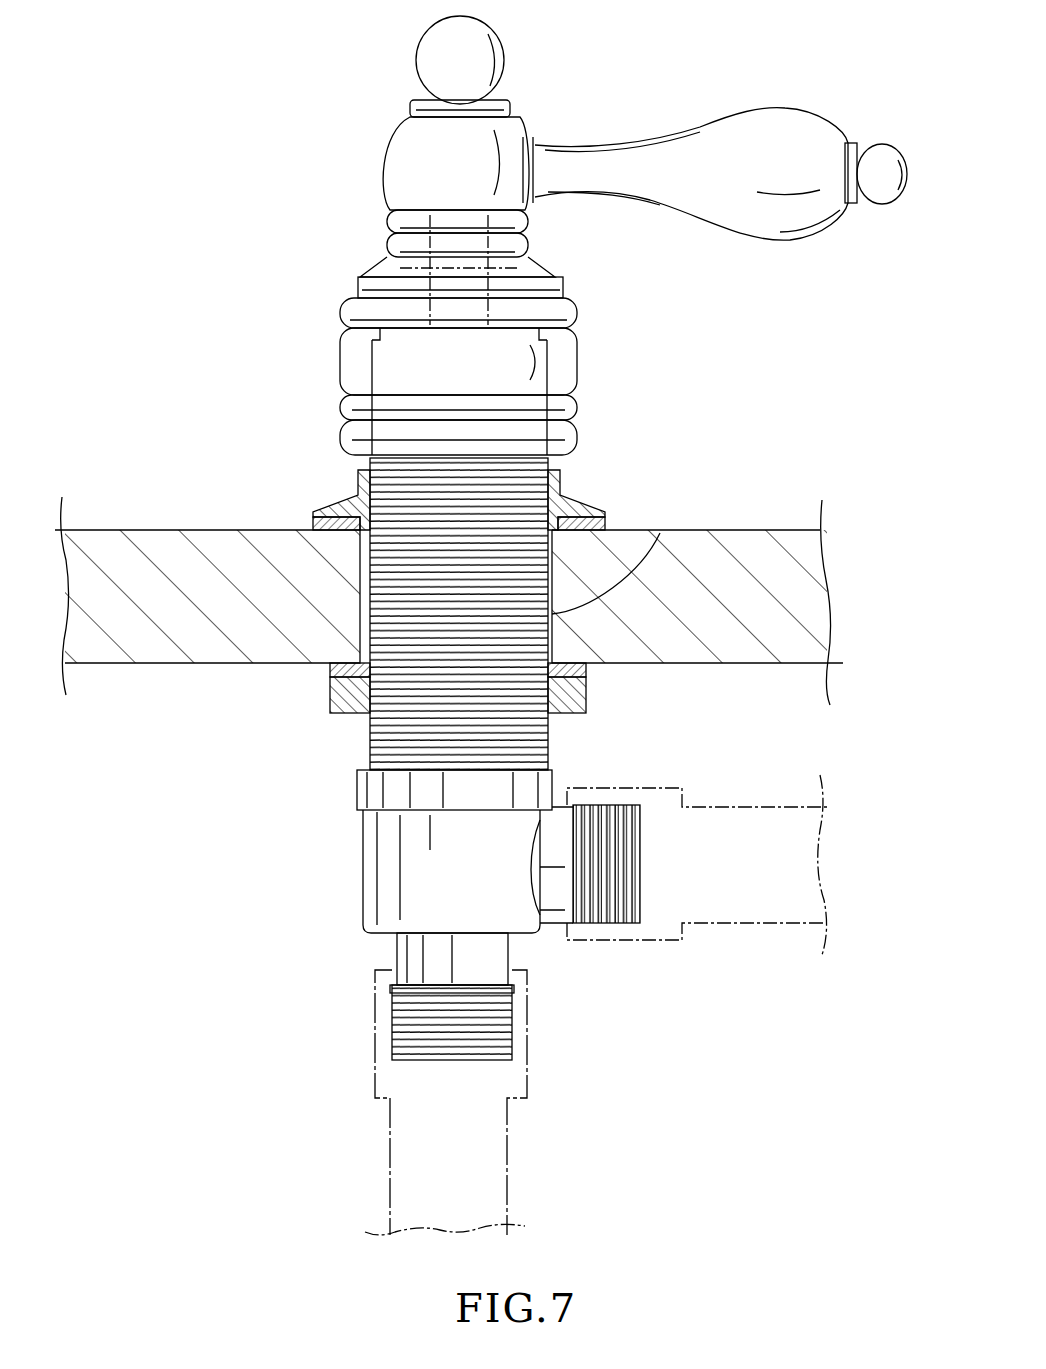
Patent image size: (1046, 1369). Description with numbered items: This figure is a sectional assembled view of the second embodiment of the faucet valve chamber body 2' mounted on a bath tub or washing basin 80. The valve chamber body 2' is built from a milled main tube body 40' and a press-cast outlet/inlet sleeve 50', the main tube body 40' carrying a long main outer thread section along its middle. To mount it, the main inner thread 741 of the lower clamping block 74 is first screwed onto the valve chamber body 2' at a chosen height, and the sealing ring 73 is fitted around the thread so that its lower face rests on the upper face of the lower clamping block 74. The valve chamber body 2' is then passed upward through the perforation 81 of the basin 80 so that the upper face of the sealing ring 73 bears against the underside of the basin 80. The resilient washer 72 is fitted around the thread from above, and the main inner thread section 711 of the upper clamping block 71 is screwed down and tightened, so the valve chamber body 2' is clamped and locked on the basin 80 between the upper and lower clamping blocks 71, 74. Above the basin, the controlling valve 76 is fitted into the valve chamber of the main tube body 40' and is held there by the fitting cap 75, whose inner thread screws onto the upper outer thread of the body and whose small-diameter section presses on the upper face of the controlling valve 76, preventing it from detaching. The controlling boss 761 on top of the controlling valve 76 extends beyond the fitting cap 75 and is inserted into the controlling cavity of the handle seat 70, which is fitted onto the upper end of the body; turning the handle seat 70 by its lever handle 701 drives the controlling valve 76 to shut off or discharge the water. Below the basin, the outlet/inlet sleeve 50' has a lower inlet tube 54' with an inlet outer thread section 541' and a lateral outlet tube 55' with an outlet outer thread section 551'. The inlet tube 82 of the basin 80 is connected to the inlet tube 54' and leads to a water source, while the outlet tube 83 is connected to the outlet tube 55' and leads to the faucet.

The handle seat 70 is at (378, 125).
The lever handle 701 is at (787, 210).
The controlling valve 76 is at (490, 280).
The controlling boss 761 is at (440, 268).
The fitting cap 75 is at (560, 365).
The main tube body 40' is at (502, 615).
The bath tub or washing basin 80 is at (118, 525).
The perforation 81 is at (690, 530).
The upper clamping block 71 is at (330, 490).
The main inner thread section 711 is at (553, 520).
The resilient washer 72 is at (315, 518).
The sealing ring 73 is at (586, 678).
The lower clamping block 74 is at (586, 713).
The main inner thread 741 is at (328, 690).
The valve chamber body 2' is at (393, 798).
The outlet/inlet sleeve 50' is at (431, 870).
The outlet tube 55' is at (596, 897).
The outlet outer thread section 551' is at (697, 839).
The outlet tube 83 is at (770, 908).
The inlet tube 54' is at (395, 968).
The inlet outer thread section 541' is at (518, 1024).
The inlet tube 82 is at (405, 1165).